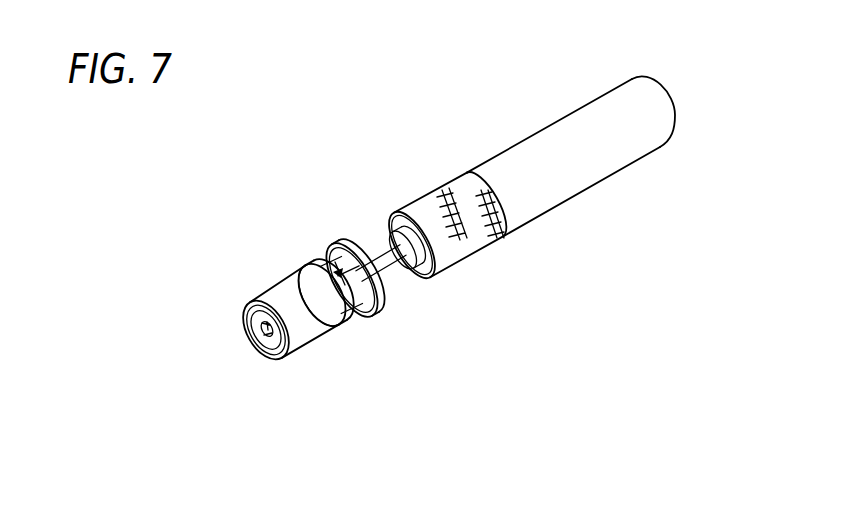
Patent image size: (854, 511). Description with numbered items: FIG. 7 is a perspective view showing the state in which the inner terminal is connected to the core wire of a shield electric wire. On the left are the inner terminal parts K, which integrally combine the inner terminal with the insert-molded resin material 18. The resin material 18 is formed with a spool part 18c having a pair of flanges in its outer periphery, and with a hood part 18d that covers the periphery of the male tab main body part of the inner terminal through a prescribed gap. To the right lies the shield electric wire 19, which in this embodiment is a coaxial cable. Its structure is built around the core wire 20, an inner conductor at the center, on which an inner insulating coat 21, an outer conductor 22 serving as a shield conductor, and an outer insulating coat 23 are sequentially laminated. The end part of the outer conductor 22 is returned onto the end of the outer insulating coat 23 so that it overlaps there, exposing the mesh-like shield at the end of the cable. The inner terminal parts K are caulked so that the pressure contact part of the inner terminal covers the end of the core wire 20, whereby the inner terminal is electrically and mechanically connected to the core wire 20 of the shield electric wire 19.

The resin material 18 is at (271, 334).
The spool part 18c is at (345, 246).
The hood part 18d is at (302, 322).
The shield electric wire 19 is at (536, 163).
The core wire 20 is at (393, 265).
The inner insulating coat 21 is at (450, 263).
The outer conductor 22 is at (484, 222).
The outer insulating coat 23 is at (603, 157).
The inner terminal parts K is at (273, 245).